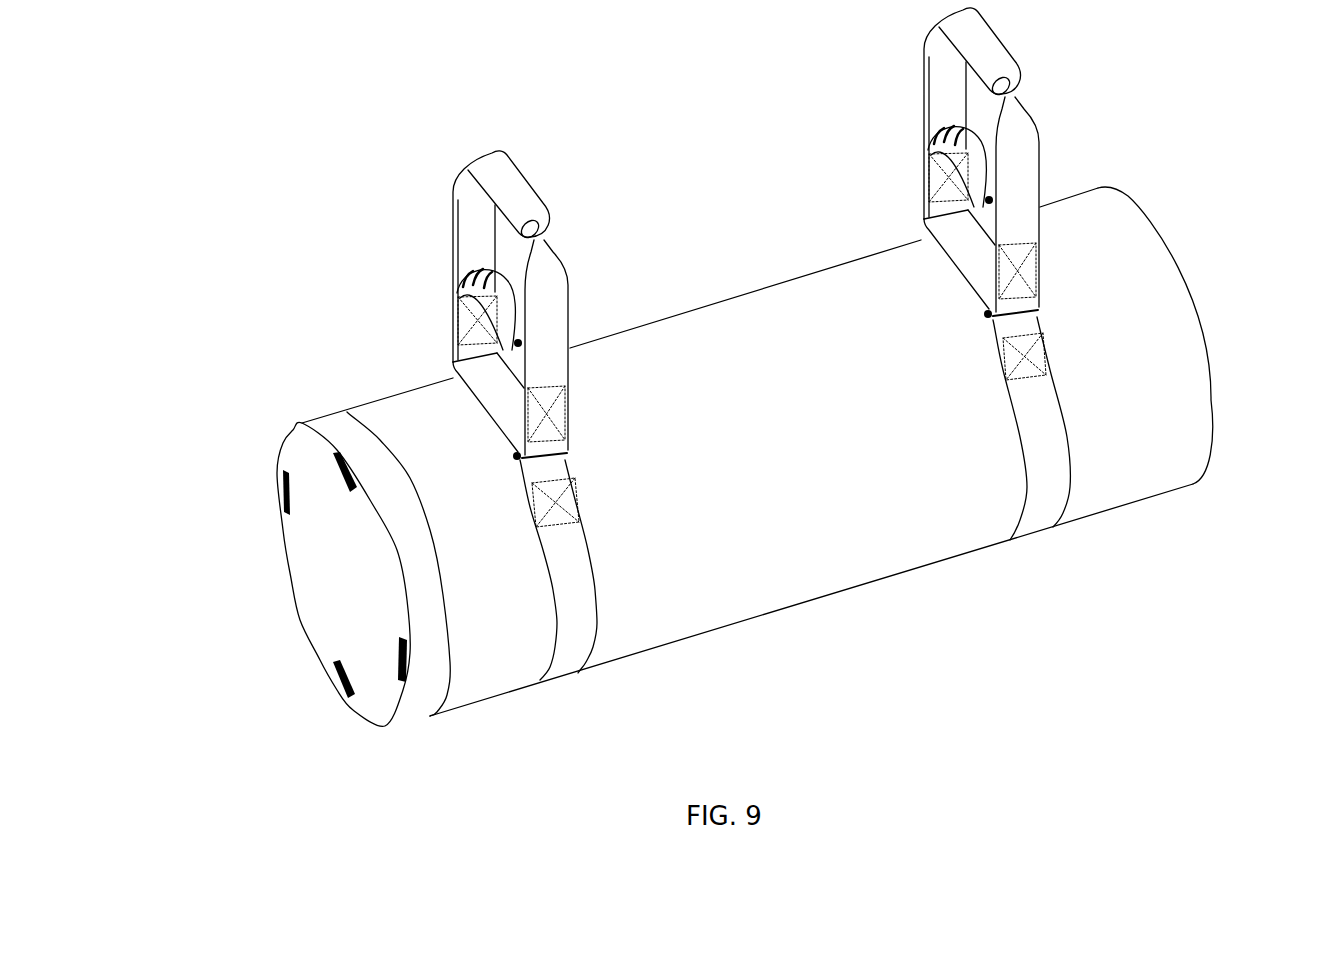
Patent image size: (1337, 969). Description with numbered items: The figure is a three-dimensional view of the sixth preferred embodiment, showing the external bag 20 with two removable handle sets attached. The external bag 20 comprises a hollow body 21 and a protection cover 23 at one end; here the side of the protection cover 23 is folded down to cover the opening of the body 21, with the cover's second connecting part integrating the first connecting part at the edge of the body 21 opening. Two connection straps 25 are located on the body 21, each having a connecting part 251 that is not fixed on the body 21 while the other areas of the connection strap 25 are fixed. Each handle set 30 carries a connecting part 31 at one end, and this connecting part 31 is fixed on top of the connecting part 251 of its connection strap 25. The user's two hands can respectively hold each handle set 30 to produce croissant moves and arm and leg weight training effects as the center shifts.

The external bag 20 is at (722, 456).
The body 21 is at (820, 597).
The protection cover 23 is at (329, 623).
The connection strap 25 is at (598, 650).
The connecting part 251 is at (533, 468).
The handle set 30 is at (418, 243).
The connecting part 31 is at (470, 377).